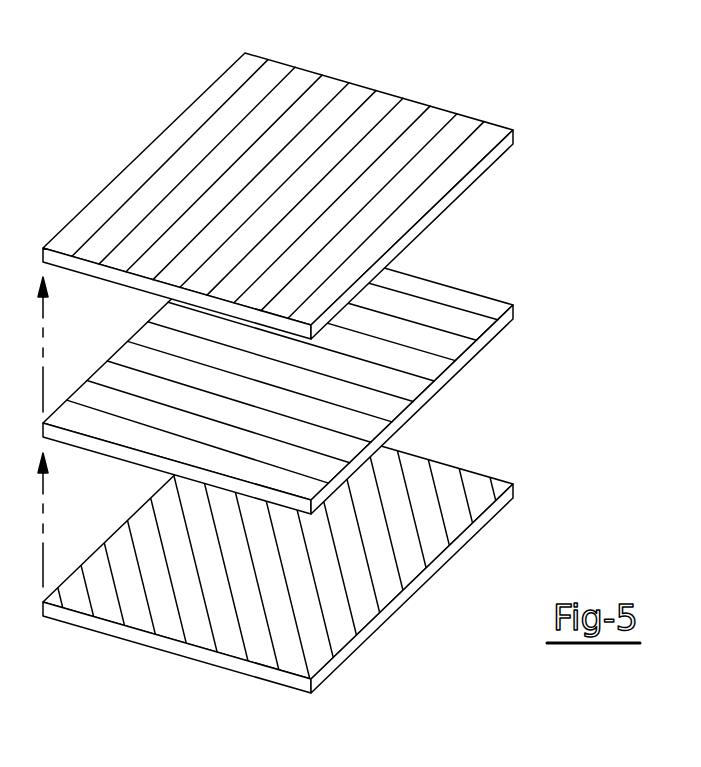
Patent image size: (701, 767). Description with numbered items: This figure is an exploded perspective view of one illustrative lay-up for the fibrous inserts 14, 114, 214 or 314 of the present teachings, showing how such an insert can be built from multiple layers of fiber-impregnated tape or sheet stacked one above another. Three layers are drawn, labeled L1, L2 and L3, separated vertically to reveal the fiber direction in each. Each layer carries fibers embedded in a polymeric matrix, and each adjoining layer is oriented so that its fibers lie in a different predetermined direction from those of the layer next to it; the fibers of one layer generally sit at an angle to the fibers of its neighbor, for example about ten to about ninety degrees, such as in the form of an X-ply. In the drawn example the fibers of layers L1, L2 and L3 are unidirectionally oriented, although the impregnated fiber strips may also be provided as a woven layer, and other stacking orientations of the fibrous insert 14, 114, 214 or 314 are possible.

The fibrous insert 14 is at (329, 362).
The fibrous insert 114 is at (329, 362).
The fibrous insert 214 is at (329, 362).
The fibrous insert 314 is at (329, 362).
The first layer L1 is at (499, 128).
The second layer L2 is at (476, 305).
The third layer L3 is at (476, 485).